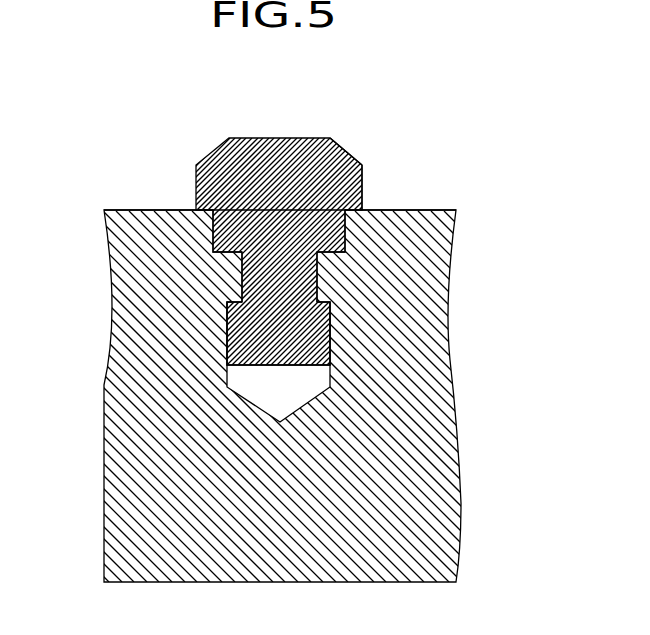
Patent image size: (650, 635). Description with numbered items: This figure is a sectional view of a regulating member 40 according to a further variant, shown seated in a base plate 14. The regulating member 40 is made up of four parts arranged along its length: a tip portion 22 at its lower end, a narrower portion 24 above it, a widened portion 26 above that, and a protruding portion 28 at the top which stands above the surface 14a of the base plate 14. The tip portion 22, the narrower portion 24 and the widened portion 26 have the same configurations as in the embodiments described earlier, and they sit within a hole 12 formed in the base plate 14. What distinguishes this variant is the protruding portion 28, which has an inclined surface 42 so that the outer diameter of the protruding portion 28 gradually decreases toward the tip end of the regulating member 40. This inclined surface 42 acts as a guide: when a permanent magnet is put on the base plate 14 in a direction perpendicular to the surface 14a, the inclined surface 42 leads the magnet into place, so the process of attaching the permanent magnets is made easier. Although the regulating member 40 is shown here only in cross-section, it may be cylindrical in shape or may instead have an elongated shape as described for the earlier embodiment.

The regulating member 40 is at (200, 144).
The inclined surface 42 is at (346, 152).
The protruding portion 28 is at (362, 187).
The widened portion 26 is at (345, 232).
The narrower portion 24 is at (317, 272).
The tip portion 22 is at (330, 315).
The screw hole 12 is at (224, 372).
The base plate 14 is at (447, 487).
The surface of the base plate 14a is at (143, 210).